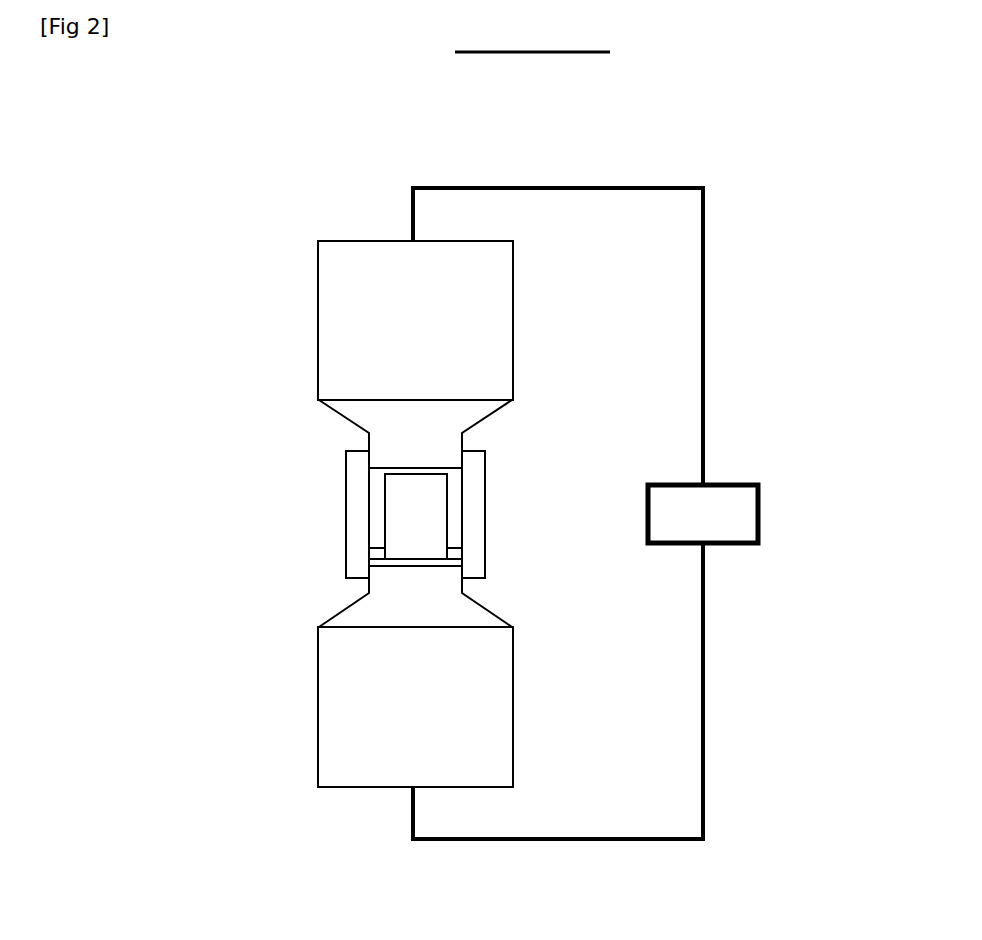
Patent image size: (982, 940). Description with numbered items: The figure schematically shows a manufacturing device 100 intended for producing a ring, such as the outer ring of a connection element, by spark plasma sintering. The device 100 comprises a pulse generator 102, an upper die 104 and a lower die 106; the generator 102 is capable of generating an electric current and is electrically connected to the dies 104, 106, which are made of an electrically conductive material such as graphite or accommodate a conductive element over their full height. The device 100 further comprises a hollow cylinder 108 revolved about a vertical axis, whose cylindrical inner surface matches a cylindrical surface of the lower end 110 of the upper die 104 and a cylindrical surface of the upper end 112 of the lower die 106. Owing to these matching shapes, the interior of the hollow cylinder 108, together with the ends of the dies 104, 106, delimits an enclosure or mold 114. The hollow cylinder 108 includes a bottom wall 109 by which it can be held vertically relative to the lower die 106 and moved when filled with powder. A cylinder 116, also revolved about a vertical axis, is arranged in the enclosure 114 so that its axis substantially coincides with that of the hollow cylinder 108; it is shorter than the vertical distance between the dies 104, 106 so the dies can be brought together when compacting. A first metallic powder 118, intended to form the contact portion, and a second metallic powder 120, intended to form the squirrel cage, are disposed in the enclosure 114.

The manufacturing device 100 is at (790, 115).
The pulse generator 102 is at (727, 528).
The upper die 104 is at (438, 337).
The lower die 106 is at (438, 723).
The hollow cylinder 108 is at (346, 517).
The bottom wall 109 is at (428, 565).
The lower end 110 is at (368, 442).
The upper end 112 is at (368, 592).
The enclosure 114 is at (375, 490).
The cylinder 116 is at (441, 528).
The first metallic powder 118 is at (454, 556).
The second metallic powder 120 is at (451, 505).